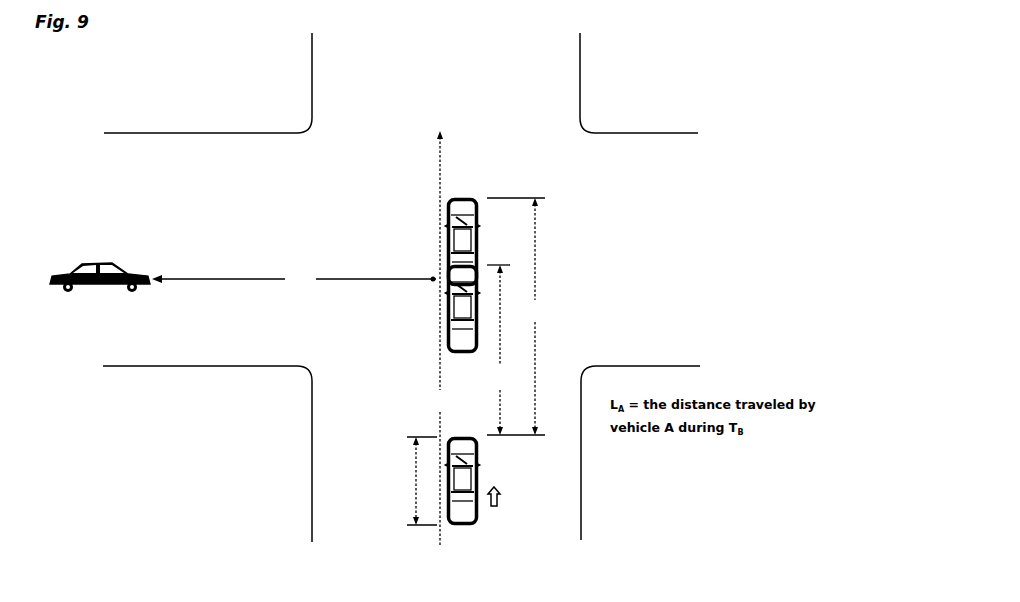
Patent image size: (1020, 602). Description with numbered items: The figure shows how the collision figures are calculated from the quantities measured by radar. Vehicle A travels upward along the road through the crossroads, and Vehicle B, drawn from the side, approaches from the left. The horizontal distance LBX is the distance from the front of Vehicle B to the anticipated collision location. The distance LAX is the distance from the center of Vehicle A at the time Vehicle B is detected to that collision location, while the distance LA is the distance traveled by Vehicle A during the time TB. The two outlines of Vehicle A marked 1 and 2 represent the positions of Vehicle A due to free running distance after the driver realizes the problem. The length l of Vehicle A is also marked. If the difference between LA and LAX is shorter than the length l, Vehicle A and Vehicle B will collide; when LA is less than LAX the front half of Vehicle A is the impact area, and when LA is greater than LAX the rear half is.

The first position of Vehicle A 1 is at (462, 309).
The second position of Vehicle A 2 is at (462, 242).
The Vehicle A is at (484, 497).
The Vehicle B is at (100, 302).
The distance LBX is at (294, 280).
The distance LA is at (528, 316).
The distance LAX is at (476, 350).
The length of Vehicle A l is at (417, 481).